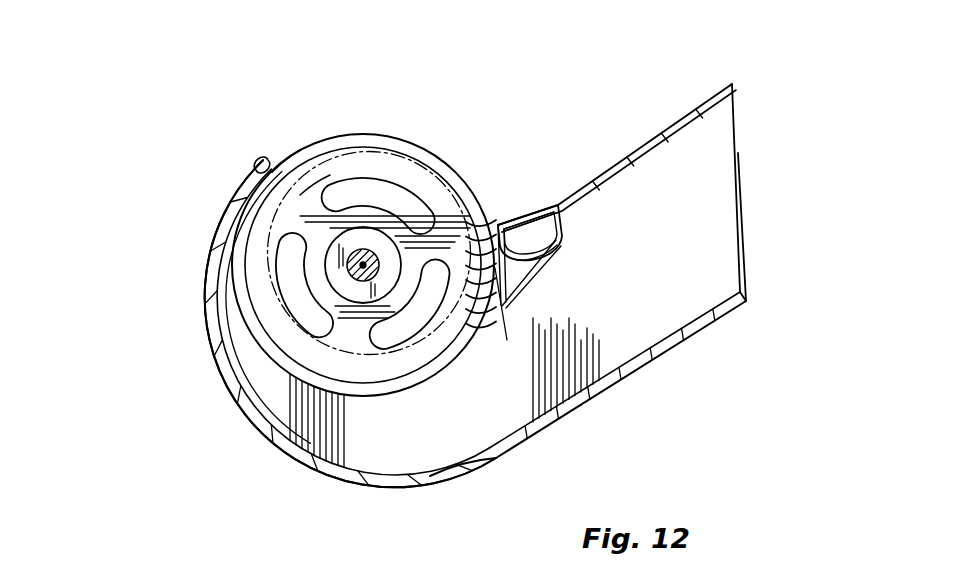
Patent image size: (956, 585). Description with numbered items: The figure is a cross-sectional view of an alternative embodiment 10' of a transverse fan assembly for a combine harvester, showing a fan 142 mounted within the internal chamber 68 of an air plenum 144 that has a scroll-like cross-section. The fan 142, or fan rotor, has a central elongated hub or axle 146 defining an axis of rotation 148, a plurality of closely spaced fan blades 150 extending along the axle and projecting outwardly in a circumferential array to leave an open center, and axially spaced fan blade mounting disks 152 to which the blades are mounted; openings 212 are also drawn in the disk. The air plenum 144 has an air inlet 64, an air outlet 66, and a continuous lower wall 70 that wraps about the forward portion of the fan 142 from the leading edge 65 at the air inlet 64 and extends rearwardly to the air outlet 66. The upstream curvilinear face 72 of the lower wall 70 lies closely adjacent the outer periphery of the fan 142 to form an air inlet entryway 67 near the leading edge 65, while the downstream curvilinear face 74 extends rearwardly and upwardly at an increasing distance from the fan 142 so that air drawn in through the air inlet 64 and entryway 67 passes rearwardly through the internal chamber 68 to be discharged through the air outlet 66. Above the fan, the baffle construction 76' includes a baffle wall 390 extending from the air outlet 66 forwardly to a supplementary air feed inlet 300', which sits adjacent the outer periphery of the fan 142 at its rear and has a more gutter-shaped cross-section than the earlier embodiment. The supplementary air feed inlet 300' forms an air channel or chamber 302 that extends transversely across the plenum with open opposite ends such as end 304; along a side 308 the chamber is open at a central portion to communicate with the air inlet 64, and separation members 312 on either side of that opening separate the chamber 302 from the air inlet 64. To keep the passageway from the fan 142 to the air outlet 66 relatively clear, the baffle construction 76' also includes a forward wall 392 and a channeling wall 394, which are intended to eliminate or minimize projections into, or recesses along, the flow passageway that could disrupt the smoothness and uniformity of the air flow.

The alternative embodiment of the transverse fan assembly 10' is at (290, 323).
The air inlet 64 is at (358, 112).
The leading edge 65 is at (261, 168).
The air outlet 66 is at (713, 155).
The air inlet entryway 67 is at (272, 170).
The internal chamber 68 is at (455, 452).
The lower wall 70 is at (297, 450).
The upstream curvilinear face 72 is at (236, 206).
The downstream curvilinear face 74 is at (633, 382).
The baffle construction 76' is at (619, 123).
The fan 142 is at (277, 370).
The air plenum 144 is at (708, 337).
The hub or axle 146 is at (356, 275).
The axis of rotation 148 is at (352, 268).
The fan blades 150 is at (475, 290).
The fan blade mounting disks 152 is at (302, 196).
The arcuate slot 212 is at (377, 197).
The supplementary air feed inlet 300' is at (591, 236).
The air channel or chamber 302 is at (547, 230).
The open end 304 is at (540, 207).
The side 308 is at (500, 215).
The separation members 312 is at (518, 215).
The baffle wall 390 is at (732, 83).
The forward wall 392 is at (533, 287).
The channeling wall 394 is at (503, 270).